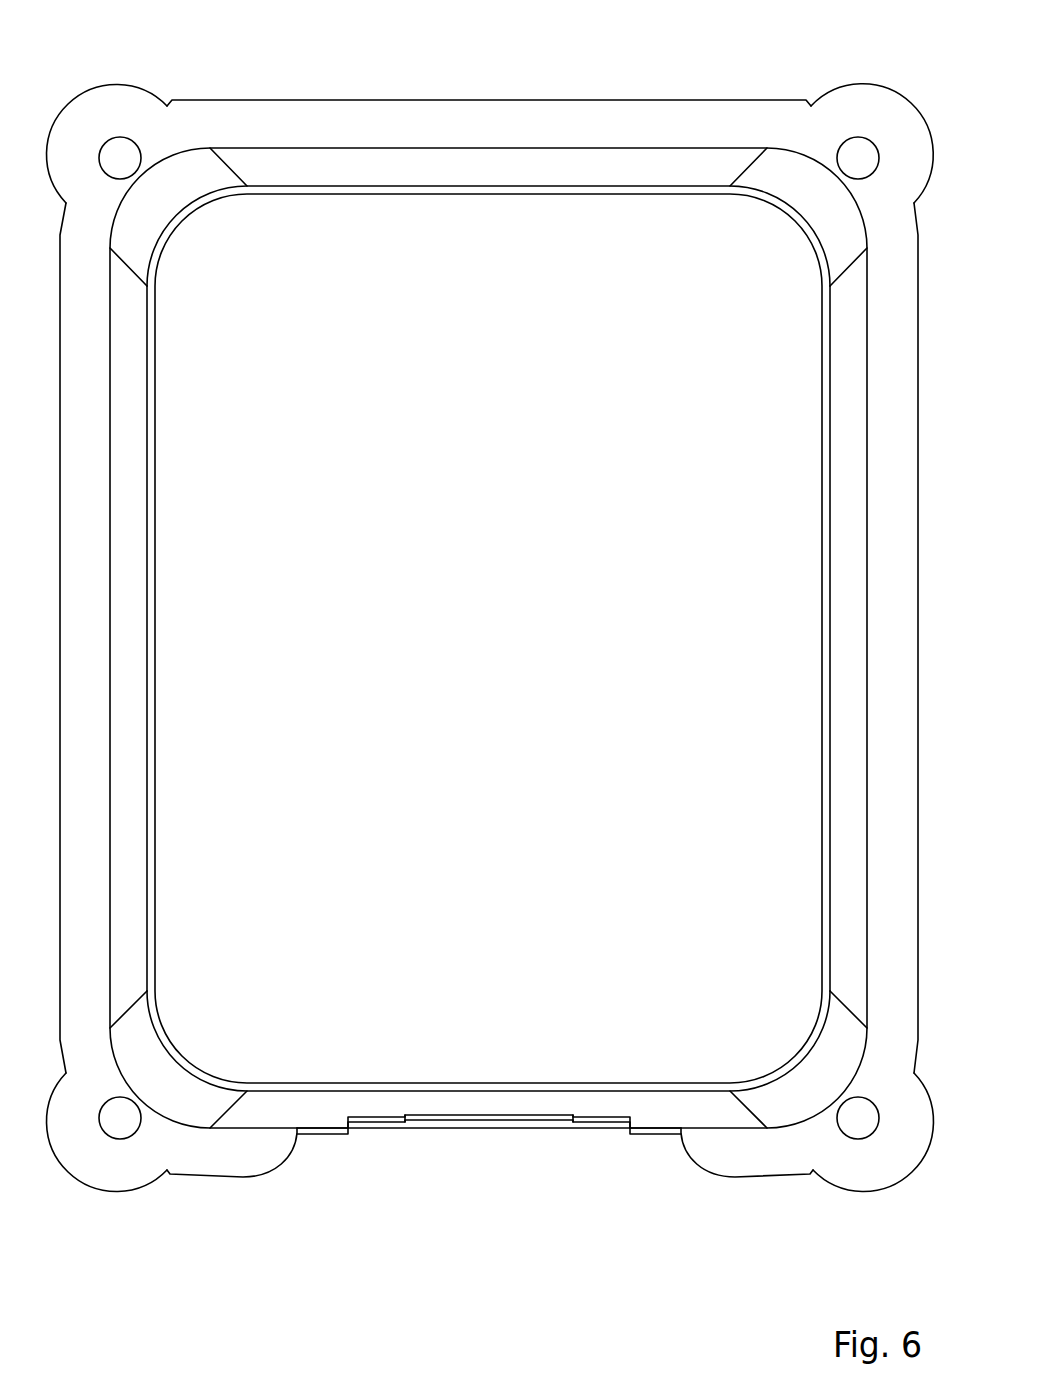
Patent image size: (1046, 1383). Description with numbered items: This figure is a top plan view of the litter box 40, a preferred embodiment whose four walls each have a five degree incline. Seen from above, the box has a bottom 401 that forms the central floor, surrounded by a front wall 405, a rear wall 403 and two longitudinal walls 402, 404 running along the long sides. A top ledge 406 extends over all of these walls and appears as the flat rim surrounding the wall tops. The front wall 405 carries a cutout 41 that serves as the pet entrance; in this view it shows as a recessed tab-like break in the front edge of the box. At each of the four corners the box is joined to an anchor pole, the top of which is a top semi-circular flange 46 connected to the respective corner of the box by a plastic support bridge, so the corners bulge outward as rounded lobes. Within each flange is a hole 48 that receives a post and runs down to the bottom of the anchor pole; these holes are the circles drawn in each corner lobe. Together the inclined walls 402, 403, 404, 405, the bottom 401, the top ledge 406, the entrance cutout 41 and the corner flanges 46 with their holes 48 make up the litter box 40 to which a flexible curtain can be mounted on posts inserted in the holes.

The litter box 40 is at (502, 620).
The cutout 41 is at (523, 1122).
The top semi-circular flange 46 is at (900, 1153).
The hole 48 is at (857, 1123).
The bottom 401 is at (478, 713).
The longitudinal wall 402 is at (848, 673).
The rear wall 403 is at (502, 173).
The longitudinal wall 404 is at (135, 692).
The front wall 405 is at (462, 1099).
The top ledge 406 is at (610, 115).